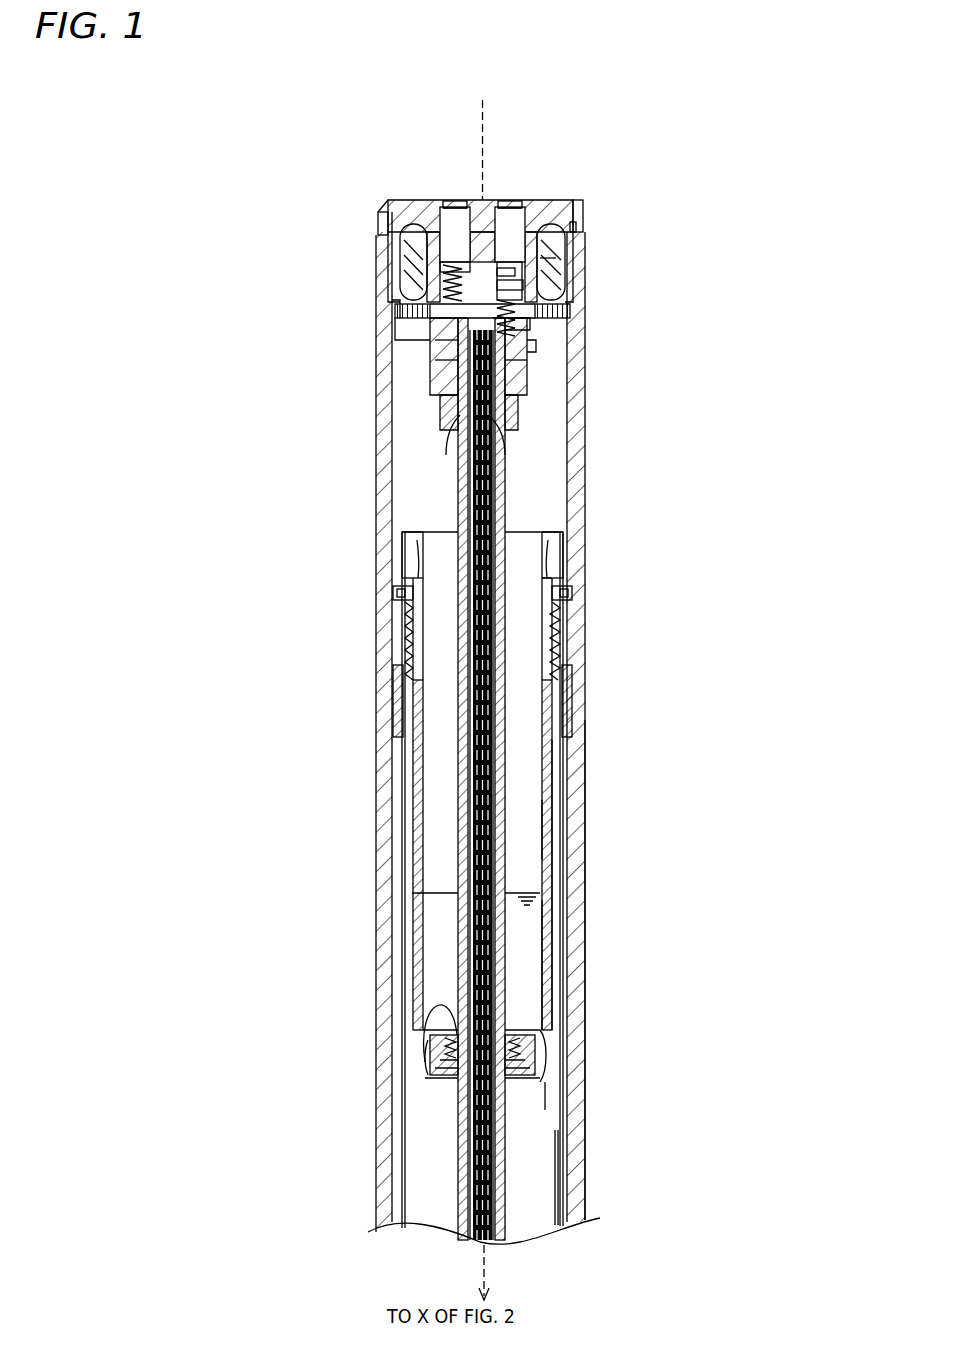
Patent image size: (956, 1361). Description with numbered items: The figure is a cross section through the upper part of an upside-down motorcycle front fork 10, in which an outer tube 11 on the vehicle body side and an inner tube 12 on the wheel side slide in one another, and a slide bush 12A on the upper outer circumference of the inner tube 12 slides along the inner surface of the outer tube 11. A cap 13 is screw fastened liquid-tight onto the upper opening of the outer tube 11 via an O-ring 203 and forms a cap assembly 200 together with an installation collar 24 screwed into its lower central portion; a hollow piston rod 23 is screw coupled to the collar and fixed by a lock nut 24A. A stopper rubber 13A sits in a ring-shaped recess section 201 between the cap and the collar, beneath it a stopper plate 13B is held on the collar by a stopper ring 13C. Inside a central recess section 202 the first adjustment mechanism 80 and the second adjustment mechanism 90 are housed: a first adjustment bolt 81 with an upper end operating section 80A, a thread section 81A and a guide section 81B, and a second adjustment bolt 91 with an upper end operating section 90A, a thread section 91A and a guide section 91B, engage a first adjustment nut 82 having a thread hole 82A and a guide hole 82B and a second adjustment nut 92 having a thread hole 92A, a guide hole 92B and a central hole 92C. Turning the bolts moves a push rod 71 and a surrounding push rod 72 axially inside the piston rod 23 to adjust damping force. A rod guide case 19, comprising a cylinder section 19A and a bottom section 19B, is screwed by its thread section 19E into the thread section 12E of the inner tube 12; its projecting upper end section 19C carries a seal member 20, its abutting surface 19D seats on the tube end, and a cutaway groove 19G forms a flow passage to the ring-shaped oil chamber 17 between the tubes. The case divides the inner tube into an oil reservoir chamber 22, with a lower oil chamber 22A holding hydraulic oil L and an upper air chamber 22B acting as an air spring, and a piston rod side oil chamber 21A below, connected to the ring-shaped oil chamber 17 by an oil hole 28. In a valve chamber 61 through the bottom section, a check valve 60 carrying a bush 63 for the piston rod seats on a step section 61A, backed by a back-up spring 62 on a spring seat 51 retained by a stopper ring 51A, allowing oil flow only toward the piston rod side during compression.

The front fork 10 is at (531, 68).
The outer tube 11 is at (588, 476).
The inner tube 12 is at (564, 757).
The slide bush 12A is at (396, 676).
The thread section 12E is at (542, 660).
The cap 13 is at (578, 202).
The stopper rubber 13A is at (400, 300).
The stopper plate 13B is at (402, 315).
The stopper ring 13C is at (402, 334).
The ring-shaped oil chamber 17 is at (585, 970).
The rod guide case 19 is at (567, 527).
The cylinder section 19A is at (550, 782).
The bottom section 19B is at (532, 1050).
The projecting upper end section 19C is at (553, 566).
The abutting surface 19D is at (400, 600).
The thread section 19E is at (548, 650).
The cutaway groove 19G is at (550, 600).
The seal member 20 is at (398, 590).
The piston rod side oil chamber 21A is at (545, 1110).
The oil reservoir chamber 22 is at (552, 700).
The oil chamber 22A is at (546, 920).
The air chamber 22B is at (546, 830).
The piston rod 23 is at (460, 490).
The installation collar 24 is at (442, 385).
The lock nut 24A is at (446, 406).
The oil hole 28 is at (566, 1150).
The spring seat 51 is at (440, 1085).
The stopper ring 51A is at (445, 1095).
The check valve 60 is at (435, 1025).
The valve chamber 61 is at (448, 1086).
The step section 61A is at (445, 1046).
The back-up spring 62 is at (440, 1070).
The bush 63 is at (440, 1005).
The push rod 71 is at (492, 425).
The push rod 72 is at (502, 456).
The first adjustment mechanism 80 is at (446, 207).
The upper end operating section 80A is at (466, 206).
The first adjustment bolt 81 is at (468, 207).
The thread section 81A is at (444, 270).
The guide section 81B is at (450, 346).
The first adjustment nut 82 is at (560, 240).
The thread hole 82A is at (392, 250).
The guide hole 82B is at (548, 260).
The second adjustment mechanism 90 is at (512, 207).
The upper end operating section 90A is at (506, 206).
The second adjustment bolt 91 is at (503, 207).
The thread section 91A is at (512, 330).
The guide section 91B is at (516, 272).
The second adjustment nut 92 is at (527, 302).
The thread hole 92A is at (527, 282).
The guide hole 92B is at (456, 366).
The central hole 92C is at (522, 365).
The cap assembly 200 is at (576, 200).
The ring-shaped recess section 201 is at (574, 226).
The central recess section 202 is at (532, 346).
The O-ring 203 is at (381, 225).
The hydraulic oil L is at (540, 862).